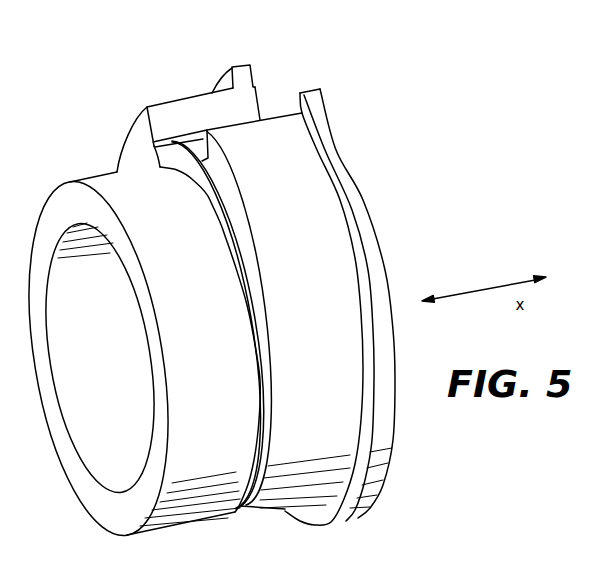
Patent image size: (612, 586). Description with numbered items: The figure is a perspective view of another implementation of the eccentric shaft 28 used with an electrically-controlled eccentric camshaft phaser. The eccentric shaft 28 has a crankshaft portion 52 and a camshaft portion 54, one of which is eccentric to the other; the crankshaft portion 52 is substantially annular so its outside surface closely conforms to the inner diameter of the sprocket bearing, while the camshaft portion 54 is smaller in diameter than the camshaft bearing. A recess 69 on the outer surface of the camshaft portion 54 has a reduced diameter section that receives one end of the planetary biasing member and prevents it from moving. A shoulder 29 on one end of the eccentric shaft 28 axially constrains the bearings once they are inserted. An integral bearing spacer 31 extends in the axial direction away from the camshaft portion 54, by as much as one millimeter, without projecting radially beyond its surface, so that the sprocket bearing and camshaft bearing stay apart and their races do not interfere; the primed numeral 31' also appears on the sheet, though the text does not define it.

The eccentric shaft 28 is at (218, 40).
The recess 69 is at (182, 118).
The integral bearing spacer 31 is at (141, 120).
The shoulder 29 is at (360, 162).
The crankshaft portion 52 is at (230, 522).
The camshaft portion 54 is at (331, 529).
The boss (alternate) 31' is at (533, 573).